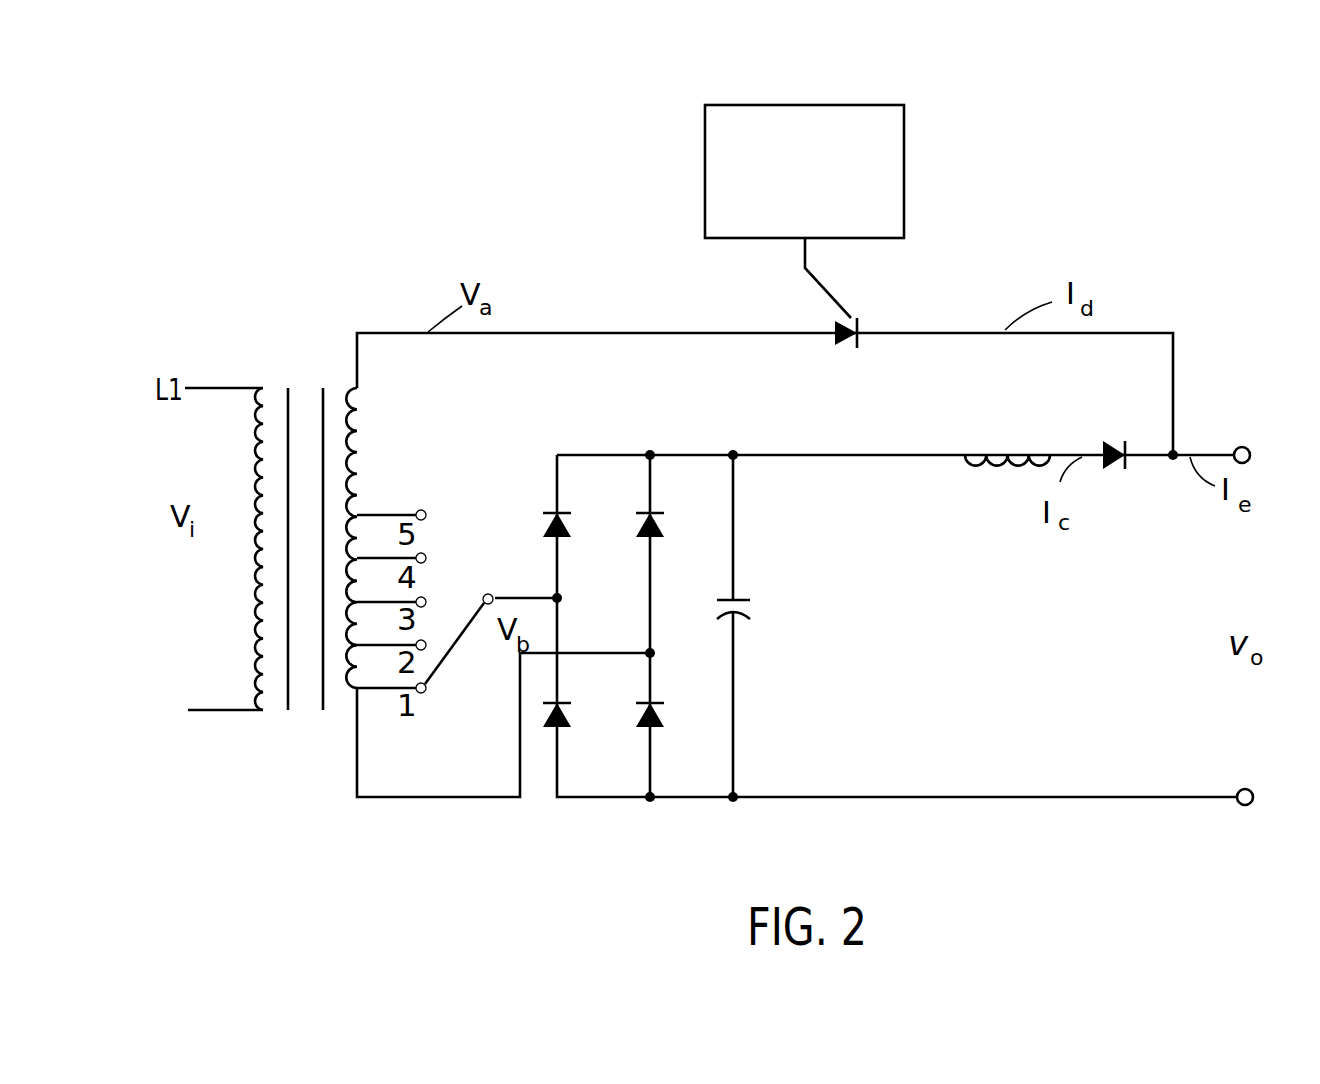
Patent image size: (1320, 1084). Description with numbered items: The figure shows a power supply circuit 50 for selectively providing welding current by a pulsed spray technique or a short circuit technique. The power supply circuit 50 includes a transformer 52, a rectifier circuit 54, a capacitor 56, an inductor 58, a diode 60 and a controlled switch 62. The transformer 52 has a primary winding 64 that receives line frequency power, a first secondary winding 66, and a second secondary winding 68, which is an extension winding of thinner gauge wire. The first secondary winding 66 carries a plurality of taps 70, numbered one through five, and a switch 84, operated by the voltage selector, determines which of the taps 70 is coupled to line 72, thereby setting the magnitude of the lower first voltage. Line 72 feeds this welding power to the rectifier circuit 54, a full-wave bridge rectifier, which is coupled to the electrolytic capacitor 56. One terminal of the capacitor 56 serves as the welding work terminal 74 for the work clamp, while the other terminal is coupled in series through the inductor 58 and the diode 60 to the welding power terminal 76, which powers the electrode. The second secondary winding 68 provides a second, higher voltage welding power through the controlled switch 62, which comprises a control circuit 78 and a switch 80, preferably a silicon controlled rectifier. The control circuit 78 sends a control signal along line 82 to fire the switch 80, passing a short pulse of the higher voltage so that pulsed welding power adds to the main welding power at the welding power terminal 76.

The power supply circuit 50 is at (1078, 172).
The transformer 52 is at (269, 360).
The rectifier circuit 54 is at (609, 435).
The capacitor 56 is at (790, 623).
The inductor 58 is at (1021, 433).
The diode 60 is at (1134, 474).
The controlled switch 62 is at (640, 165).
The primary winding 64 is at (258, 680).
The first secondary winding 66 is at (352, 695).
The second secondary winding 68 is at (360, 412).
The taps 70 is at (423, 472).
The line 72 is at (471, 621).
The welding work terminal 74 is at (1232, 790).
The welding power terminal 76 is at (1203, 455).
The control circuit 78 is at (904, 160).
The switch 80 is at (862, 321).
The line 82 is at (805, 265).
The switch 84 is at (468, 648).